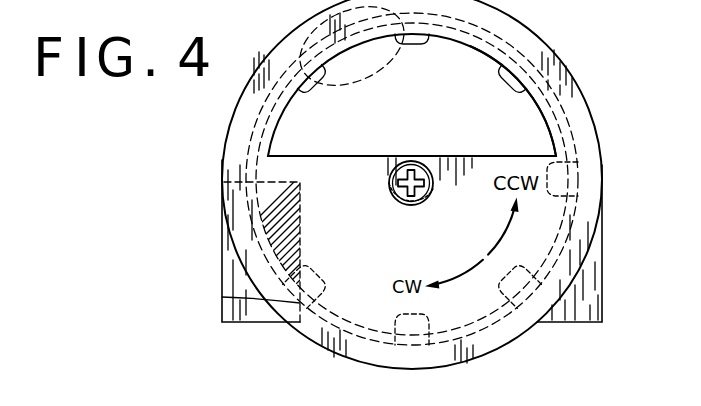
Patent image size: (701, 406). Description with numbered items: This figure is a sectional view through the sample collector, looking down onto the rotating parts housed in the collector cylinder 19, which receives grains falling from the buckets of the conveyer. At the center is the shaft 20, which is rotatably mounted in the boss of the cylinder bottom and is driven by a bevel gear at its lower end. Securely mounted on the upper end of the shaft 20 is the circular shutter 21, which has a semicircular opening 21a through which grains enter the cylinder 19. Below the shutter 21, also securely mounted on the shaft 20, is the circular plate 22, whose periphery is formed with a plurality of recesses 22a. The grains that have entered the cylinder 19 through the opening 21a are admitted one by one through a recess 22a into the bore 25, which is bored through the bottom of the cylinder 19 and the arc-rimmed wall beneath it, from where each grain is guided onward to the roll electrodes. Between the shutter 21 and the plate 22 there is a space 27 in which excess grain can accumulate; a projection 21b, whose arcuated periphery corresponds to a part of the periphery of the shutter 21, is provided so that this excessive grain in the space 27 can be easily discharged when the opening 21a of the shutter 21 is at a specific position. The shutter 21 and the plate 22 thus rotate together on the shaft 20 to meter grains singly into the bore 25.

The collector cylinder 19 is at (500, 338).
The shaft 20 is at (390, 188).
The circular shutter 21 is at (585, 196).
The semicircular opening 21a is at (480, 78).
The projection 21b is at (282, 190).
The circular plate 22 is at (367, 317).
The recess 22a is at (420, 323).
The bore 25 is at (316, 27).
The space 27 is at (222, 297).